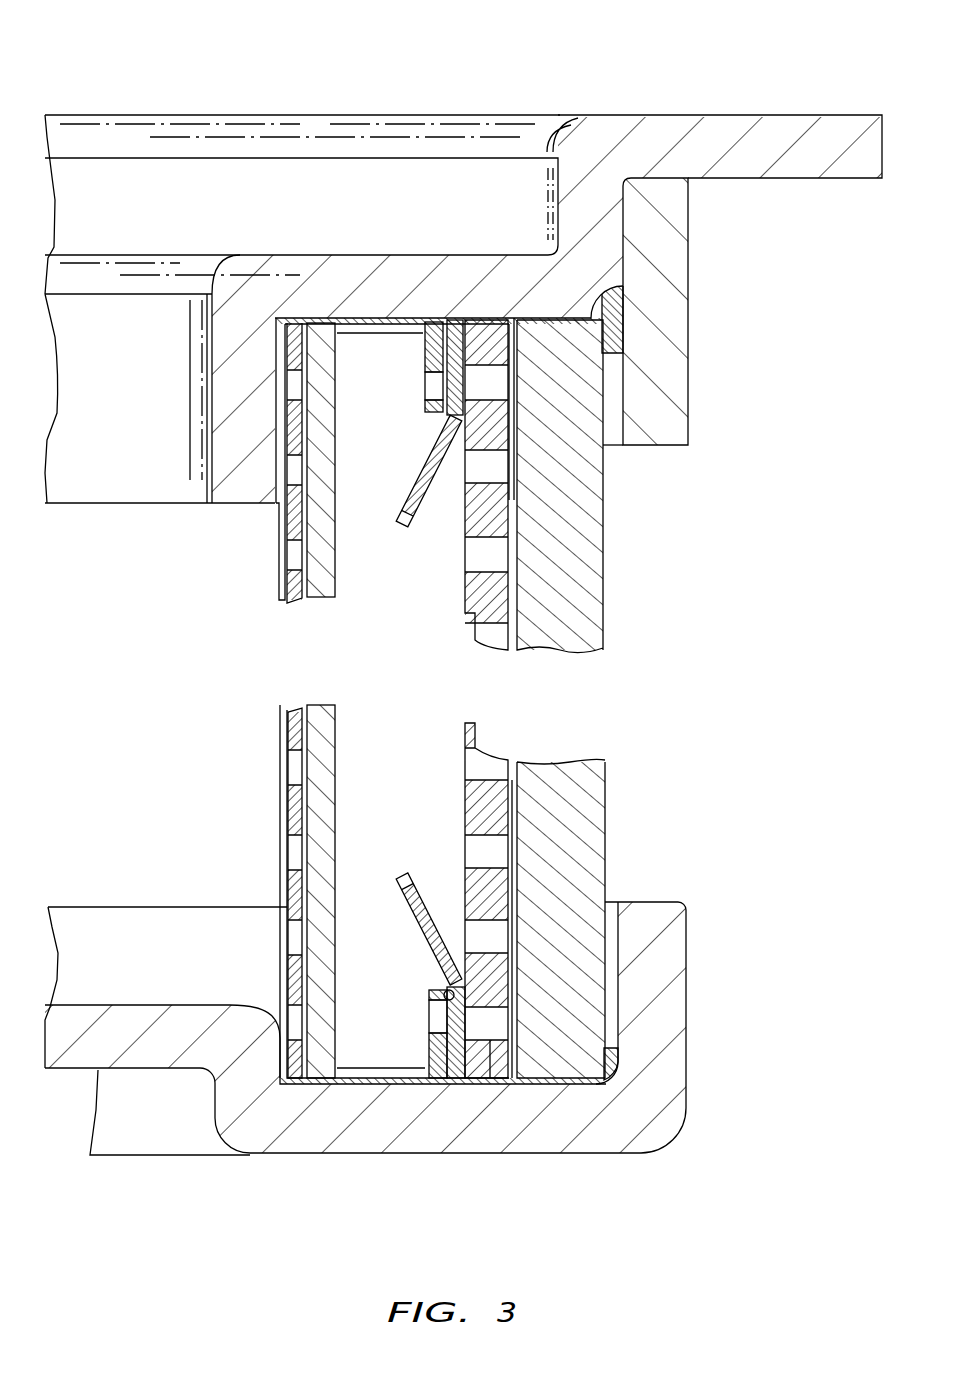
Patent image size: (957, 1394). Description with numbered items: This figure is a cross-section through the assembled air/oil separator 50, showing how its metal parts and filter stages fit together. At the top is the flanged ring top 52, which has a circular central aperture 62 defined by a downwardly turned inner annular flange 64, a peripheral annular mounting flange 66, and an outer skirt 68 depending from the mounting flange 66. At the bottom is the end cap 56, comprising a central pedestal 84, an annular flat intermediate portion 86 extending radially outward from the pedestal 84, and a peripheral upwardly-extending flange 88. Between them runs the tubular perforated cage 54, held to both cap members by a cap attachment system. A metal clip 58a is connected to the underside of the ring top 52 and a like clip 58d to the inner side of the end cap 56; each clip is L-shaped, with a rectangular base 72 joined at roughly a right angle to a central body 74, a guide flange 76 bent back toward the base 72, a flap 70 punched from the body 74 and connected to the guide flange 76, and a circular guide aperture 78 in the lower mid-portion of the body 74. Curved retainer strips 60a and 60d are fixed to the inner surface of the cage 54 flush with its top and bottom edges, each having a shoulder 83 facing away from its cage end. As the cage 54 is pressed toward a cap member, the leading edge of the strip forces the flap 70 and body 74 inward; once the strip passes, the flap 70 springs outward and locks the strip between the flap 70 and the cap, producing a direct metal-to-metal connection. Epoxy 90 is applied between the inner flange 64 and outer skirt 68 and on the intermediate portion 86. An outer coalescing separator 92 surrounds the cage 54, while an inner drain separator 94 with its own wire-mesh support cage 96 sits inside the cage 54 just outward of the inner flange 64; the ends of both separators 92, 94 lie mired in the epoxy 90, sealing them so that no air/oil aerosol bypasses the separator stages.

The air/oil separator 50 is at (80, 1194).
The flanged ring top 52 is at (533, 86).
The cage 54 is at (492, 1072).
The end cap 56 is at (742, 1046).
The metal clip 58a is at (372, 372).
The metal clip 58d is at (368, 996).
The retainer strip 60a is at (458, 320).
The retainer strip 60d is at (452, 1087).
The central aperture 62 is at (110, 248).
The inner annular flange 64 is at (220, 398).
The mounting flange 66 is at (650, 114).
The outer skirt 68 is at (690, 387).
The flap 70 is at (458, 420).
The base 72 is at (375, 316).
The central body 74 is at (428, 366).
The guide flange 76 is at (397, 536).
The guide aperture 78 is at (432, 405).
The shoulder 83 is at (413, 470).
The central pedestal 84 is at (75, 1053).
The intermediate portion 86 is at (370, 1156).
The peripheral flange 88 is at (672, 976).
The epoxy 90 is at (625, 330).
The outer separator 92 is at (590, 562).
The inner separator 94 is at (330, 770).
The wire-mesh support cage 96 is at (293, 790).